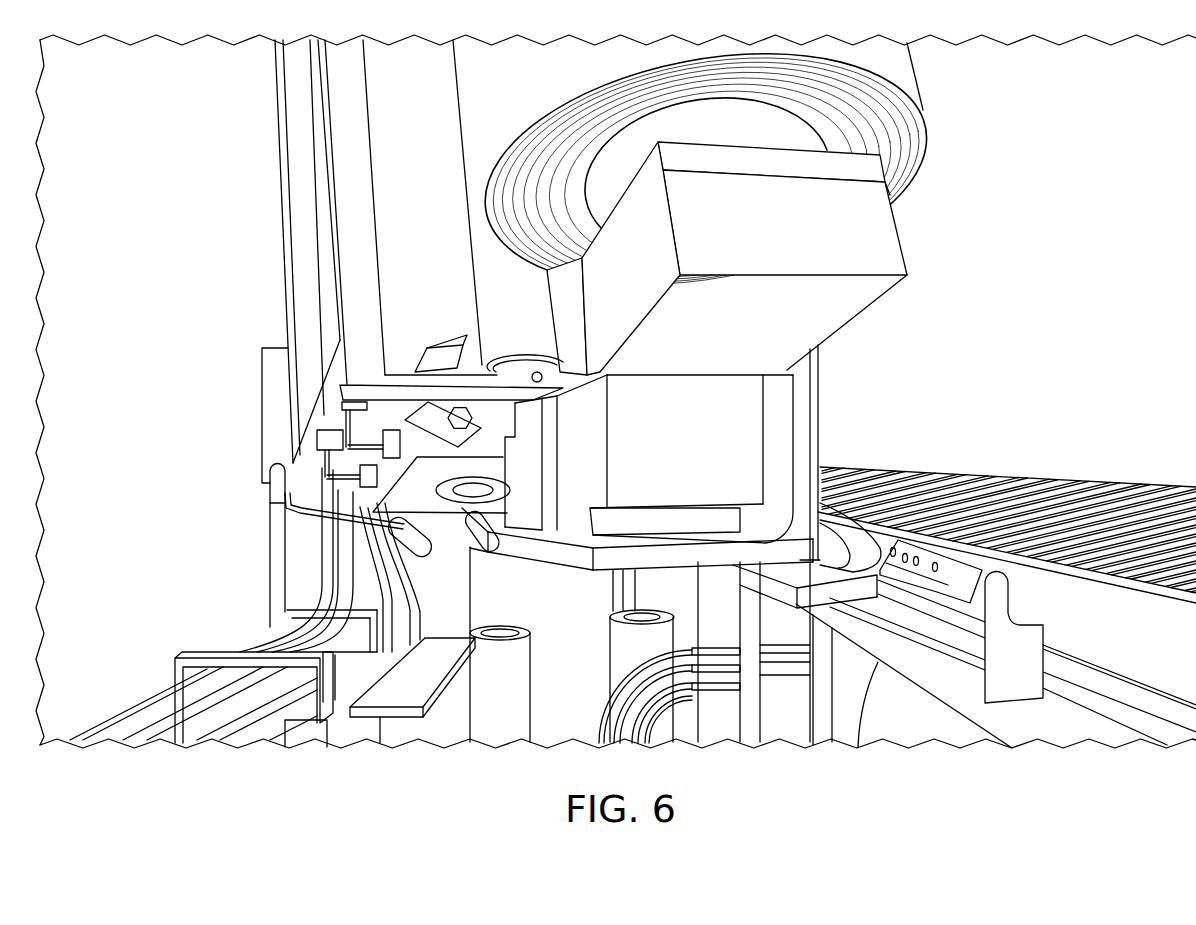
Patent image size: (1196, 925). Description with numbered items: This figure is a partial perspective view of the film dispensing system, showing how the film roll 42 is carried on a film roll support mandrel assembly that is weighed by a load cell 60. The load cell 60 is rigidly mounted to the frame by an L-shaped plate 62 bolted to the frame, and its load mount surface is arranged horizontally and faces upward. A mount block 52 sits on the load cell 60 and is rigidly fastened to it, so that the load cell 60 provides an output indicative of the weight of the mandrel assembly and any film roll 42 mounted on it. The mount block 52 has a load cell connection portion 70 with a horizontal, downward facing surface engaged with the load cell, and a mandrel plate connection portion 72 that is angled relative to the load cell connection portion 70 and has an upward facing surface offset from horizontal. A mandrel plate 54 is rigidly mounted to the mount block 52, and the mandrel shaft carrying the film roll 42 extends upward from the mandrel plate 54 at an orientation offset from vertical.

The film roll 42 is at (900, 72).
The mount block 52 is at (793, 258).
The mandrel plate 54 is at (873, 167).
The load cell 60 is at (637, 555).
The L-shaped plate 62 is at (688, 452).
The load cell connection portion 70 is at (537, 320).
The mandrel plate connection portion 72 is at (873, 213).